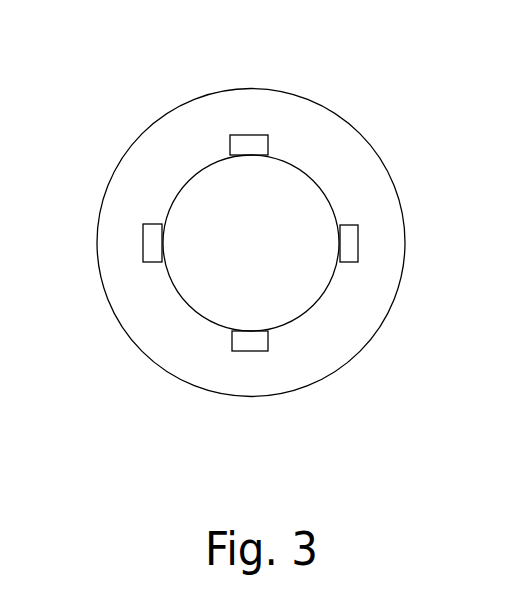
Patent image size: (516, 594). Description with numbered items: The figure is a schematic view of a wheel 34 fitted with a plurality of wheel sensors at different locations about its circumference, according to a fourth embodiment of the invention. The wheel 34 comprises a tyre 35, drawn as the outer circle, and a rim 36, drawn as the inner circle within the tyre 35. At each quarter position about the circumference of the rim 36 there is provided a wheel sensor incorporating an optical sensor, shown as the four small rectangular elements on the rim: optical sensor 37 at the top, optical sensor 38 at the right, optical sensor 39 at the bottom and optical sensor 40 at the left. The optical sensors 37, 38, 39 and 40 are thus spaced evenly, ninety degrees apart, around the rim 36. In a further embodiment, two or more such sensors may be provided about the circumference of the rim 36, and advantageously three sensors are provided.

The wheel 34 is at (255, 233).
The tyre 35 is at (382, 162).
The rim 36 is at (317, 305).
The optical sensor 37 is at (252, 142).
The optical sensor 38 is at (350, 243).
The optical sensor 39 is at (240, 341).
The optical sensor 40 is at (143, 248).